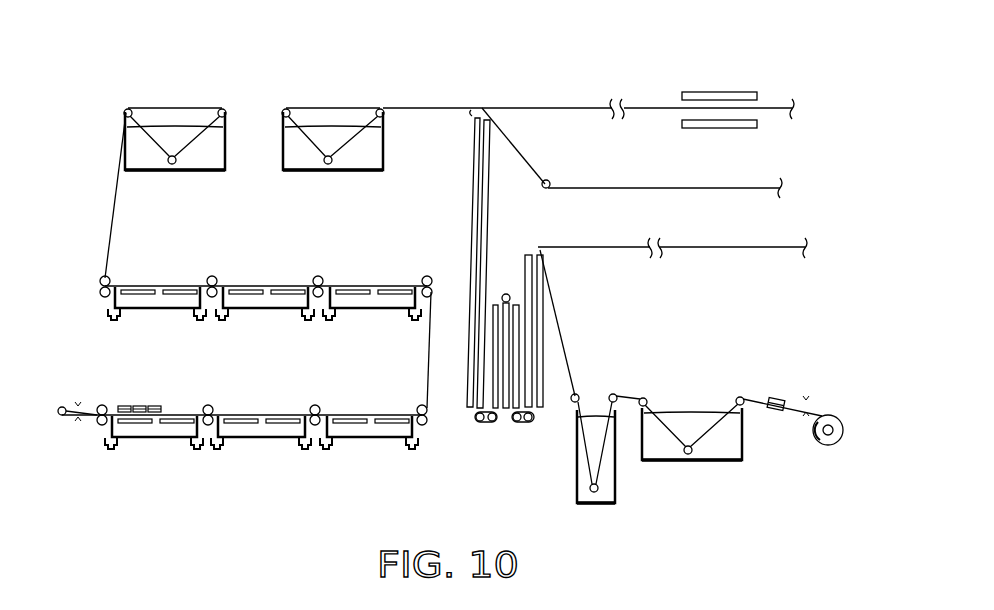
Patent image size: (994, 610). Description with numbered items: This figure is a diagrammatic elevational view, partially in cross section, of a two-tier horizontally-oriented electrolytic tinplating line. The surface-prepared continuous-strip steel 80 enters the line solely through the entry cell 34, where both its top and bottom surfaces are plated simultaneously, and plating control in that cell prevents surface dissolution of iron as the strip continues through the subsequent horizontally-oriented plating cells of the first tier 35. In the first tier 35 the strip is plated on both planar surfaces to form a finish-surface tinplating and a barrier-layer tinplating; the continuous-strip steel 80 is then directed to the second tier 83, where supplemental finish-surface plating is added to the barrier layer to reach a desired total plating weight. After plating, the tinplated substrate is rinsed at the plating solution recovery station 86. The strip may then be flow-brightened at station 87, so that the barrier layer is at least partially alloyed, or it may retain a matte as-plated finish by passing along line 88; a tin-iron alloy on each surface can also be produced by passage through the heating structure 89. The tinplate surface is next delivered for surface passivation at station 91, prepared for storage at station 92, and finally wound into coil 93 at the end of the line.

The entry cell 34 is at (147, 450).
The first tier 35 is at (262, 492).
The continuous-strip steel 80 is at (428, 387).
The second tier 83 is at (299, 266).
The plating solution recovery station 86 is at (212, 200).
The flow-brightening station 87 is at (506, 237).
The matte finish line 88 is at (722, 187).
The heating structure 89 is at (722, 75).
The surface passivation station 91 is at (652, 512).
The storage preparation station 92 is at (806, 392).
The coil 93 is at (832, 445).